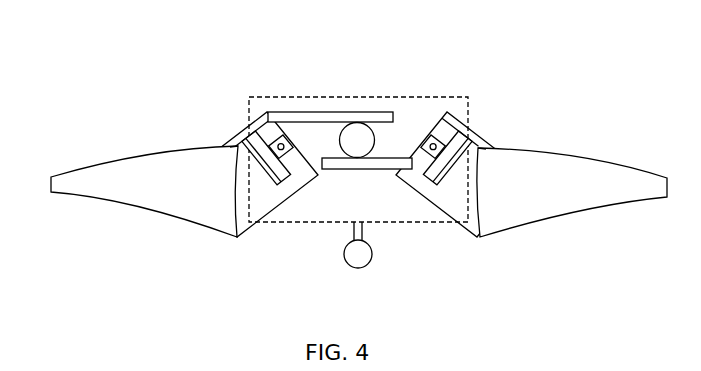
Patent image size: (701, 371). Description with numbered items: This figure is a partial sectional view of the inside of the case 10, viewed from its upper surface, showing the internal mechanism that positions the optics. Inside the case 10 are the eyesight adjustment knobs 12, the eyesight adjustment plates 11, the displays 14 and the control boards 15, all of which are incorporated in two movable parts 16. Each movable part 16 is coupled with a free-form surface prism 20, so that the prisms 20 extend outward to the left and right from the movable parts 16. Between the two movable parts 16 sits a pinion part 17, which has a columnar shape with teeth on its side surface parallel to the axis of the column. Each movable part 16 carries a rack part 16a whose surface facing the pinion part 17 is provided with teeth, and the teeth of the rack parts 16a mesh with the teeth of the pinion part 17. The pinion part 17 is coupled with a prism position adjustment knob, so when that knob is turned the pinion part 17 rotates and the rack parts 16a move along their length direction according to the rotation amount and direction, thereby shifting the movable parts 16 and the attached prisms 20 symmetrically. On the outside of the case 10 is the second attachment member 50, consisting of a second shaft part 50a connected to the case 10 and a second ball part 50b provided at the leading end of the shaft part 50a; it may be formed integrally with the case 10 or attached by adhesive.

The case 10 is at (386, 97).
The eyesight adjustment plate 11 is at (296, 173).
The eyesight adjustment knob 12 is at (268, 112).
The display 14 is at (238, 144).
The control board 15 is at (252, 124).
The movable part 16 is at (260, 222).
The rack part 16a is at (322, 113).
The pinion part 17 is at (360, 133).
The free-form surface prism 20 is at (117, 173).
The second attachment member 50 is at (371, 272).
The second shaft part 50a is at (353, 229).
The second ball part 50b is at (352, 266).